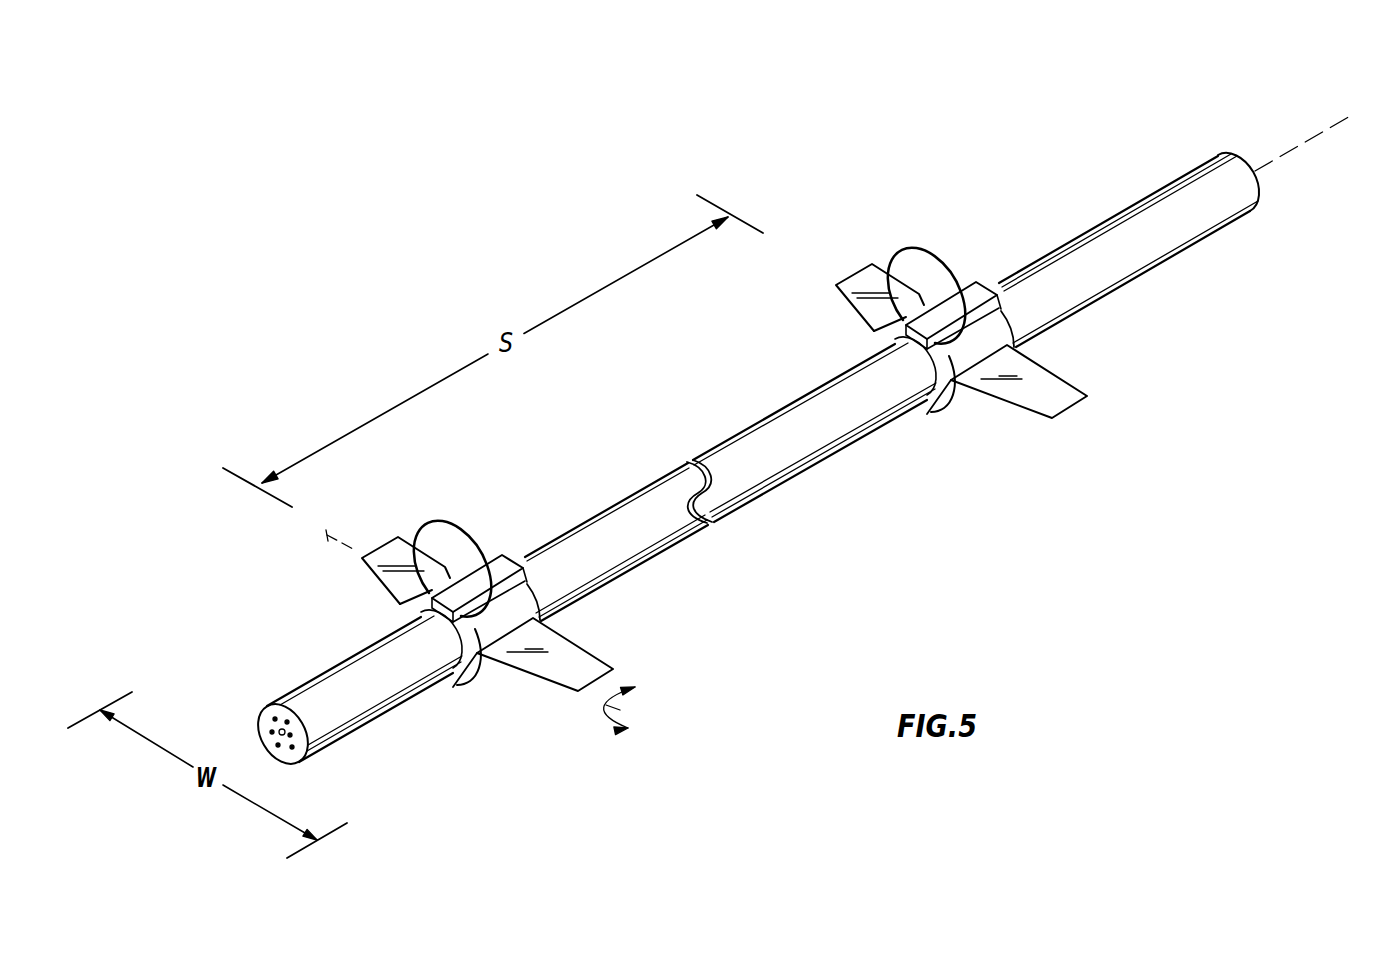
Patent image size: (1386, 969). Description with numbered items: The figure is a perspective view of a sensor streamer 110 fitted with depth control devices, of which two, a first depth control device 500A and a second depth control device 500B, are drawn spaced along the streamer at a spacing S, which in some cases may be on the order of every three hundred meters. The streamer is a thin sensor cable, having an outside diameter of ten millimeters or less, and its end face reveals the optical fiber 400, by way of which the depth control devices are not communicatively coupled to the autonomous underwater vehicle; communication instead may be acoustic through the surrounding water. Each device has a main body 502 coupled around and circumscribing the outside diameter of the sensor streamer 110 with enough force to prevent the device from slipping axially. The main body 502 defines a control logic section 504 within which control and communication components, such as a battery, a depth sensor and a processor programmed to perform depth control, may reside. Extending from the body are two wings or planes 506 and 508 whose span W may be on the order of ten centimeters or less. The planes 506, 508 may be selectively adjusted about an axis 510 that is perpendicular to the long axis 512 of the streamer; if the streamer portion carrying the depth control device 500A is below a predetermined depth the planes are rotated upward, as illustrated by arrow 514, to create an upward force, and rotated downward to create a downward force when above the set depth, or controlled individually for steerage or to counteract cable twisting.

The sensor streamer 110 is at (1068, 140).
The optical fiber 400 is at (282, 733).
The depth control device 500A is at (532, 607).
The depth control device 500B is at (970, 420).
The main body 502 is at (520, 602).
The control logic section 504 is at (507, 556).
The plane 506 is at (577, 660).
The plane 508 is at (400, 548).
The axis 510 is at (328, 536).
The long axis 512 is at (1307, 138).
The arrow 514 is at (612, 698).